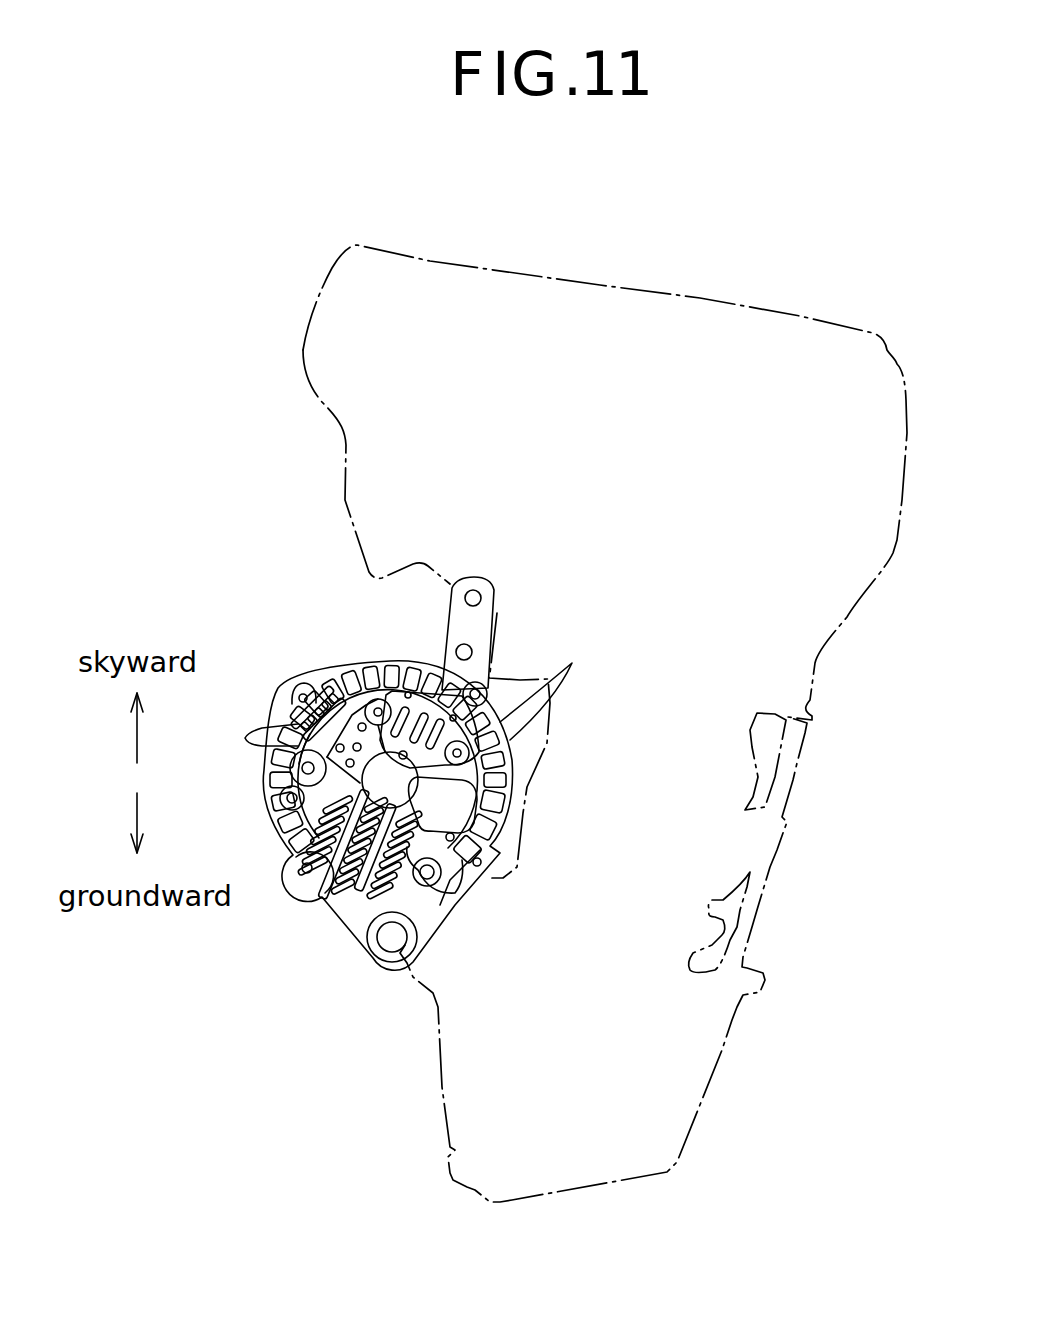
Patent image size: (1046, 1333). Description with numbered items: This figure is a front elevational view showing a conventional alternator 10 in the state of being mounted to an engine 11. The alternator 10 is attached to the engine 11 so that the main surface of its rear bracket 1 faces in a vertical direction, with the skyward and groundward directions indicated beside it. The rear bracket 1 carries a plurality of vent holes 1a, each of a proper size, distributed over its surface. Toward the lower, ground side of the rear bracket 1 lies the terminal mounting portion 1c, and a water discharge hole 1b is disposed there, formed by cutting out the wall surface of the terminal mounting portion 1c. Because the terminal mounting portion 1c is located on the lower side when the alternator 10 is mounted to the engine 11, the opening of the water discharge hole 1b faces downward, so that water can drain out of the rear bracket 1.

The rear bracket 1 is at (264, 812).
The vent holes 1a is at (262, 728).
The water discharge hole 1b is at (433, 922).
The terminal mounting portion 1c is at (462, 893).
The alternator 10 is at (401, 791).
The engine 11 is at (677, 340).